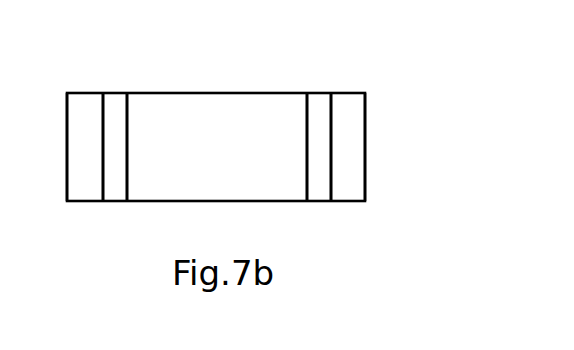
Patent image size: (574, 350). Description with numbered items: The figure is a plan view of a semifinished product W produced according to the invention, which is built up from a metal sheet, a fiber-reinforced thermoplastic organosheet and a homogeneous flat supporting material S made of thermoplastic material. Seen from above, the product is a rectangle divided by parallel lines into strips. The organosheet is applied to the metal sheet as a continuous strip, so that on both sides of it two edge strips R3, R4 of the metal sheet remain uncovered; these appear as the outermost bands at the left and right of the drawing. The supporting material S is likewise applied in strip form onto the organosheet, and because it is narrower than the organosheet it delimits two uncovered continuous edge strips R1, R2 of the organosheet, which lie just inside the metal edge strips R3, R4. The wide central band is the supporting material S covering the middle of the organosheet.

The semifinished product W is at (293, 74).
The supporting material S is at (213, 118).
The uncovered edge strip of the organosheet R1 is at (116, 105).
The uncovered edge strip of the organosheet R2 is at (319, 118).
The uncovered edge strip of the metal sheet R3 is at (78, 124).
The uncovered edge strip of the metal sheet R4 is at (352, 153).